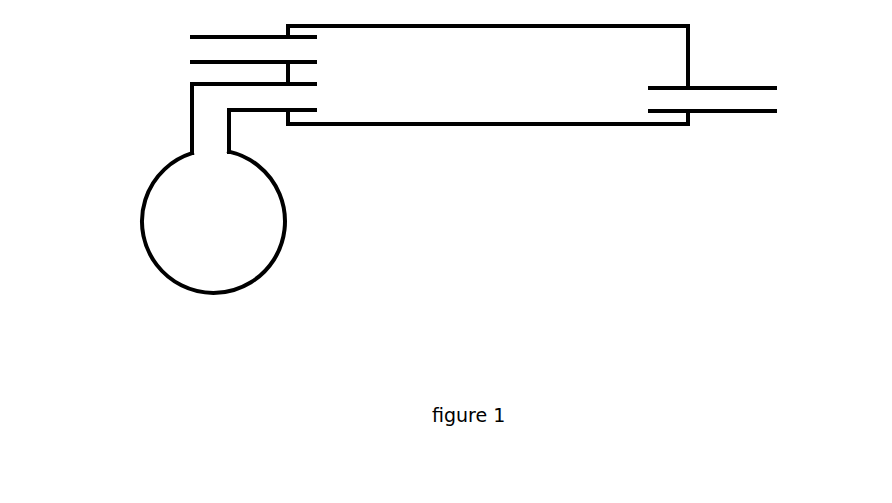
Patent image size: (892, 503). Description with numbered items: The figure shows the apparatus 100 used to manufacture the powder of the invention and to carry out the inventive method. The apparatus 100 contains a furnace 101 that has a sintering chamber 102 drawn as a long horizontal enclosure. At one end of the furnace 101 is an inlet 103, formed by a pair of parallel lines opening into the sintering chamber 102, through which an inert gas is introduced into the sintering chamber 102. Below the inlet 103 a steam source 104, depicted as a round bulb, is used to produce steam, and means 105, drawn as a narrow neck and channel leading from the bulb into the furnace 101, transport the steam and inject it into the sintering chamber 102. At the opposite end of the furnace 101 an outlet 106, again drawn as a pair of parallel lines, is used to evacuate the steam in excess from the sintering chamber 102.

The apparatus 100 is at (395, 147).
The furnace 101 is at (547, 127).
The sintering chamber 102 is at (463, 113).
The inlet 103 is at (242, 58).
The steam source 104 is at (162, 221).
The means to transport the steam 105 is at (263, 98).
The outlet 106 is at (728, 100).